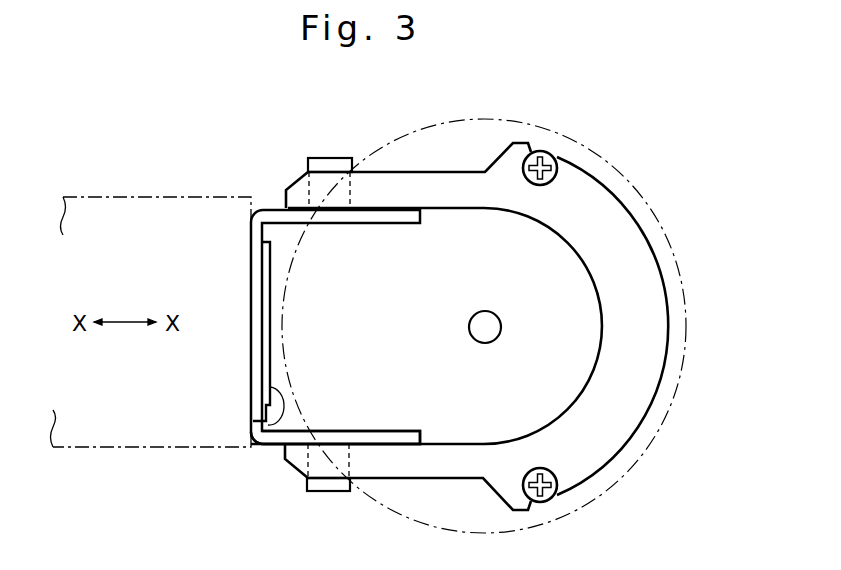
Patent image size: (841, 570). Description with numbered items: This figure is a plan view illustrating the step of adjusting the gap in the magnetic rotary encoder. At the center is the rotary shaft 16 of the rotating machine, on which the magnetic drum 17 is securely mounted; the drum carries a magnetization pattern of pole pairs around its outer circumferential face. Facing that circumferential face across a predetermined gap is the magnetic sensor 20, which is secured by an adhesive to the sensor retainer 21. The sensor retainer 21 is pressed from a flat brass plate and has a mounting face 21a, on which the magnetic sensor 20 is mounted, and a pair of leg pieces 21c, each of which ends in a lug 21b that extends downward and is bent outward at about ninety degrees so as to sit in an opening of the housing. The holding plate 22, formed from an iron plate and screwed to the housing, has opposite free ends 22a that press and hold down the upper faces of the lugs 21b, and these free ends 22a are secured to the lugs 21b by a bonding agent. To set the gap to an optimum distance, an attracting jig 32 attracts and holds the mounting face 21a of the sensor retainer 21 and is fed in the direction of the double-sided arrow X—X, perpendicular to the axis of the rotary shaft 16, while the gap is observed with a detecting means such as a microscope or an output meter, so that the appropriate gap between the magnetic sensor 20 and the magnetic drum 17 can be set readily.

The rotary shaft 16 is at (495, 332).
The magnetic drum 17 is at (670, 232).
The magnetic sensor 20 is at (280, 440).
The sensor retainer 21 is at (376, 225).
The mounting face 21a is at (250, 272).
The lug 21b is at (327, 161).
The leg piece 21c is at (383, 431).
The holding plate 22 is at (597, 455).
The free end 22a is at (289, 190).
The attracting jig 32 is at (100, 195).